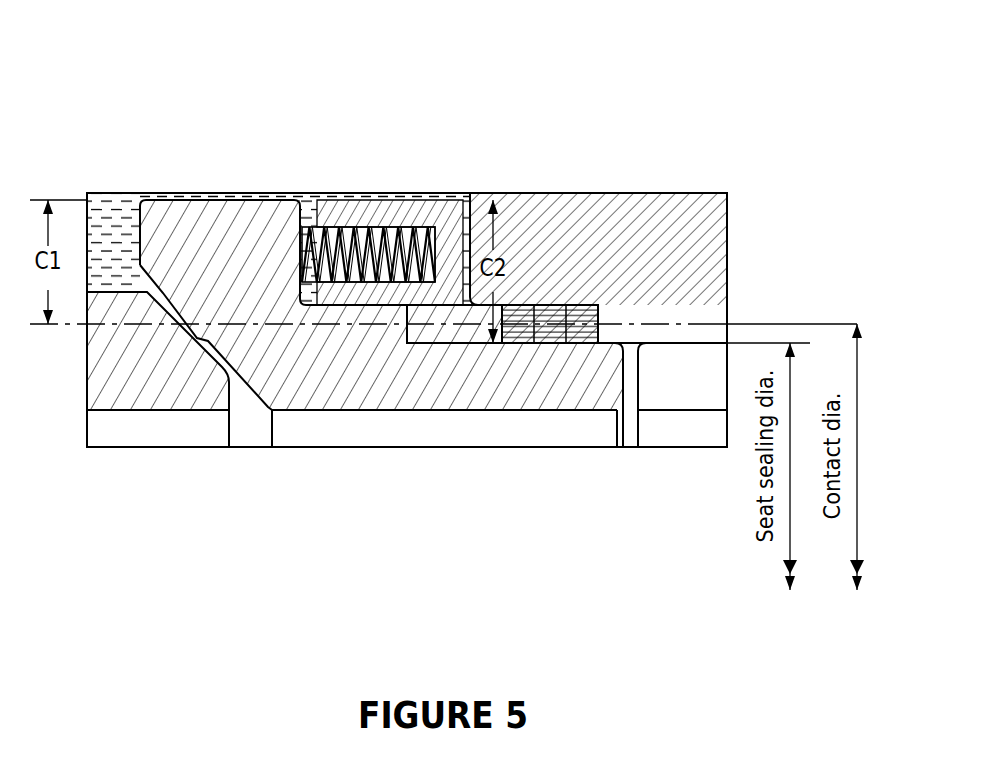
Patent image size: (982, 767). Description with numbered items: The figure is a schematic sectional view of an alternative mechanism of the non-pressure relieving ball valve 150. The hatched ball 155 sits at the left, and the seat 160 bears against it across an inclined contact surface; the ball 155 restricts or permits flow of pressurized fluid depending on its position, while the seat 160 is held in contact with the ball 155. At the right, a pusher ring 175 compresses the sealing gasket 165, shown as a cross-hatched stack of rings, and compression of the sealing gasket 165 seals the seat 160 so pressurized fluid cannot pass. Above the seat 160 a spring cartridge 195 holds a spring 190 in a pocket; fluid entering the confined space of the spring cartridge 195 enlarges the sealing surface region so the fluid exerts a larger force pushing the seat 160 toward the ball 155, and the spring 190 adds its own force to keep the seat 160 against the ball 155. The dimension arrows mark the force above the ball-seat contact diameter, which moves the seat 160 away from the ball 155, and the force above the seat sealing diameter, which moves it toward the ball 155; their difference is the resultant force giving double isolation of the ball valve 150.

The non-pressure relieving ball valve 150 is at (338, 64).
The ball 155 is at (150, 392).
The seat 160 is at (336, 392).
The sealing gasket 165 is at (518, 313).
The pusher ring 175 is at (555, 392).
The spring 190 is at (348, 240).
The spring cartridge 195 is at (430, 215).